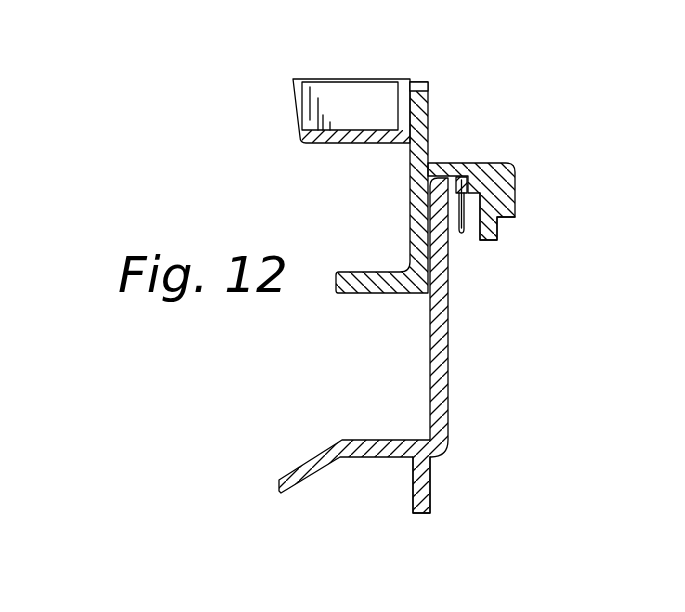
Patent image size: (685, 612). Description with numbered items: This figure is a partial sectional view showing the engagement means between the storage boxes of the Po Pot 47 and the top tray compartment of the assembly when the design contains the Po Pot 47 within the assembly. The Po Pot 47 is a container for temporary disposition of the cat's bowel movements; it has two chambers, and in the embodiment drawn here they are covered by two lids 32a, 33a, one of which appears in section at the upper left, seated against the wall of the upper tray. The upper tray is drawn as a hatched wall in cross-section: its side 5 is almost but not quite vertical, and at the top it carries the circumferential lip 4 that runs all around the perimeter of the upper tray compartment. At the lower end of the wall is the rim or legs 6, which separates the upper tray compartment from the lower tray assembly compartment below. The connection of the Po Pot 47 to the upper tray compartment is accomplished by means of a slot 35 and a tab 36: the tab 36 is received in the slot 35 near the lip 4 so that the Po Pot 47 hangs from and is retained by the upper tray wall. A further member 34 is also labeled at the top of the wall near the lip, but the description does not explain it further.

The lid 32a is at (406, 85).
The lid 33a is at (362, 92).
The cap 34 is at (424, 82).
The Po Pot 47 is at (428, 138).
The slot 35 is at (503, 165).
The circumferential lip 4 is at (513, 195).
The tab 36 is at (466, 233).
The side 5 is at (440, 387).
The rim or legs 6 is at (432, 477).